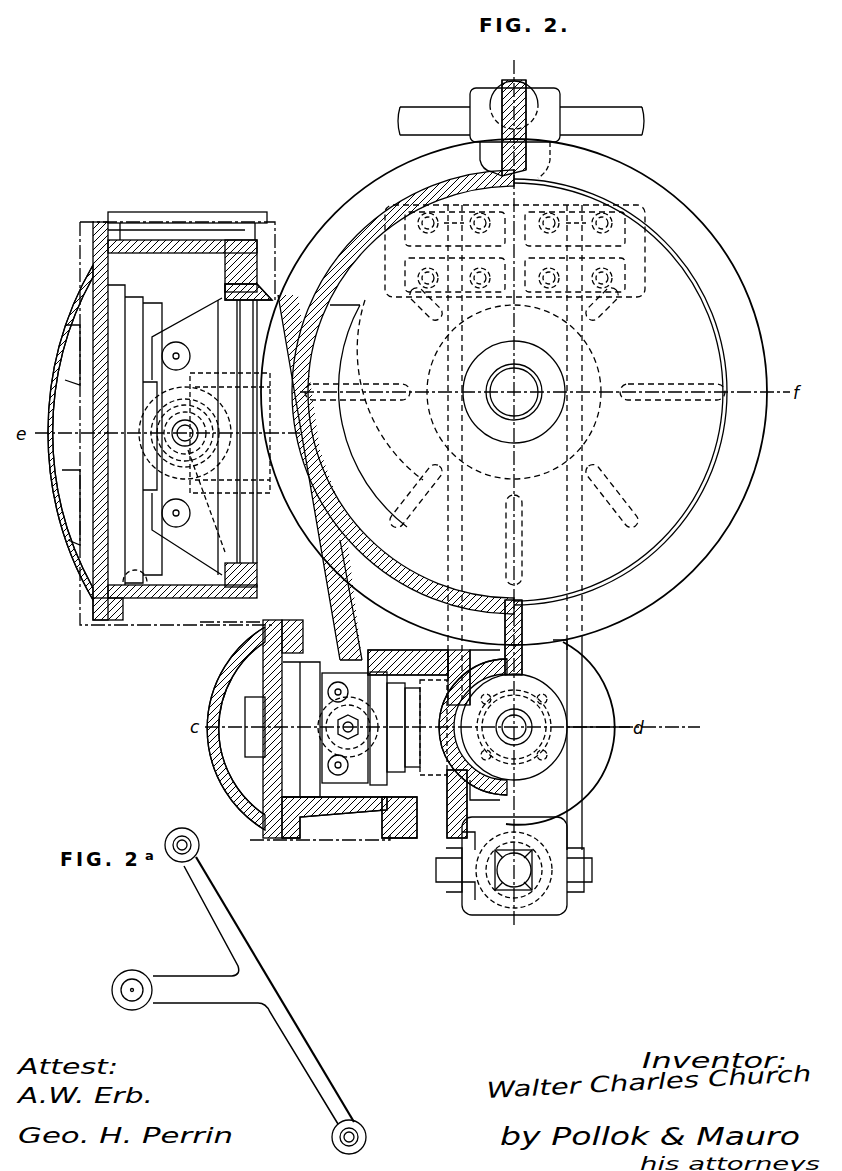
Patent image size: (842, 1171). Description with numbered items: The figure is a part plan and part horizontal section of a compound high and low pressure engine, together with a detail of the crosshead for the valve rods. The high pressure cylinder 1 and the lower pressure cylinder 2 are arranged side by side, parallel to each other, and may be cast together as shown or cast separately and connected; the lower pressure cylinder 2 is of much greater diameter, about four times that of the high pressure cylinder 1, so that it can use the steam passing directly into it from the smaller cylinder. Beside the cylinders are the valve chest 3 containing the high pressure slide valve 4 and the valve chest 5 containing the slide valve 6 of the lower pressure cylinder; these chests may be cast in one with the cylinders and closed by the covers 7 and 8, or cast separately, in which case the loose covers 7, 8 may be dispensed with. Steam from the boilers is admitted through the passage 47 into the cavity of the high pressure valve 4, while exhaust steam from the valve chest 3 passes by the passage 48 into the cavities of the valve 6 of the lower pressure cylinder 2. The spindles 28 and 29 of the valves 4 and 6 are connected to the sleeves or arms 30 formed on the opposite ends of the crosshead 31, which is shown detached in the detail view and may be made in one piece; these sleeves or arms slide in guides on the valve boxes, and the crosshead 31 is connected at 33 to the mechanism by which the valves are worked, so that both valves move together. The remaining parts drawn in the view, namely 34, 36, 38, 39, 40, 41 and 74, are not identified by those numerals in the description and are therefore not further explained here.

In FIG. 2, the high pressure cylinder 1 is at (575, 757).
In FIG. 2, the lower pressure cylinder 2 is at (378, 222).
In FIG. 2, the valve chest 3 is at (333, 787).
In FIG. 2, the high pressure slide valve 4 is at (360, 770).
In FIG. 2, the valve chest 5 is at (177, 265).
In FIG. 2, the low pressure slide valve 6 is at (187, 327).
In FIG. 2, the cover 7 is at (252, 706).
In FIG. 2, the cover 8 is at (100, 355).
In FIG. 2, the valve spindle 28 is at (337, 742).
In FIG. 2, the valve spindle 29 is at (183, 432).
In FIG. 2A, the sleeves or arms 30 is at (277, 983).
In FIG. 2A, the crosshead 31 is at (296, 1052).
In FIG. 2A, the connection point 33 is at (133, 1001).
In FIG. 2, the rod 34 is at (467, 892).
In FIG. 2, the bolt block 36 is at (613, 250).
In FIG. 2, the bracket 38 is at (530, 880).
In FIG. 2, the pin 39 is at (509, 882).
In FIG. 2, the nut 40 is at (470, 850).
In FIG. 2, the collar 41 is at (495, 905).
In FIG. 2, the steam passage 47 is at (442, 804).
In FIG. 2, the exhaust passage 48 is at (378, 640).
In FIG. 2, the plate 74 is at (232, 215).